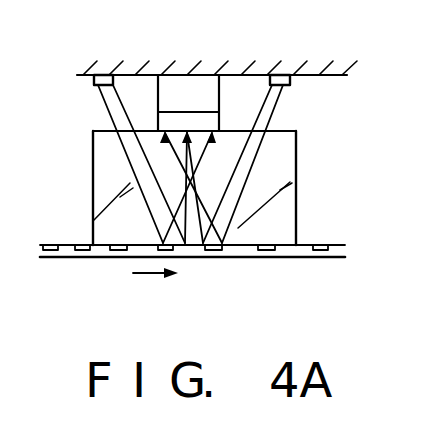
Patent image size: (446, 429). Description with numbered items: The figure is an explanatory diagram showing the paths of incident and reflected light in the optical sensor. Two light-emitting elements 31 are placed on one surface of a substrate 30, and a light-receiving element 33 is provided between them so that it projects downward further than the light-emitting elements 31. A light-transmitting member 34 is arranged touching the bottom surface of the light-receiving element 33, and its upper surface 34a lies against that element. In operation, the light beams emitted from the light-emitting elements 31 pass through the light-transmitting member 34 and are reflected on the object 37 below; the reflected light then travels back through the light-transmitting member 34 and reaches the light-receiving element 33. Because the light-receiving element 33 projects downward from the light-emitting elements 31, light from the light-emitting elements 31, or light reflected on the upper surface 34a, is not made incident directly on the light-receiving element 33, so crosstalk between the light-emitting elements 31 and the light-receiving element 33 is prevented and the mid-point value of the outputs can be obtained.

The substrate 30 is at (344, 76).
The light-emitting element 31 is at (103, 75).
The light-receiving element 33 is at (186, 118).
The light-transmitting member 34 is at (297, 203).
The upper surface of the light-transmitting member 34a is at (297, 132).
The object 37 is at (306, 258).